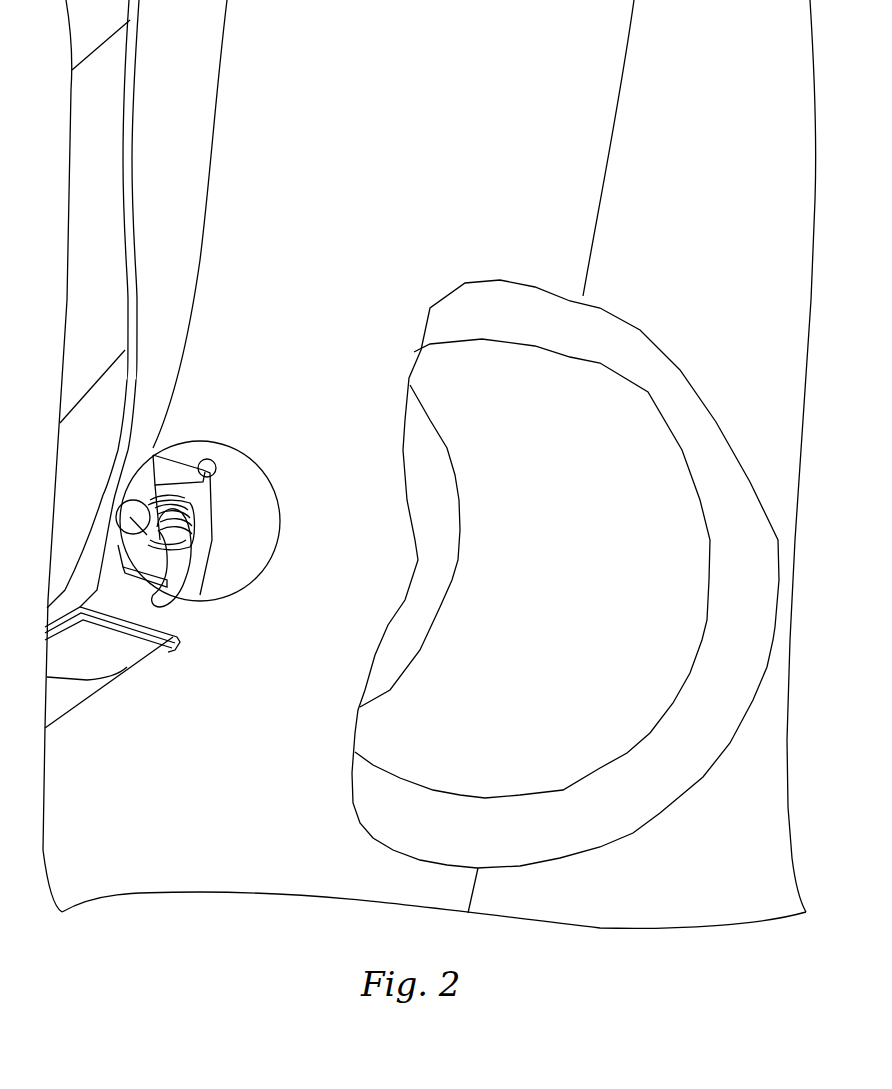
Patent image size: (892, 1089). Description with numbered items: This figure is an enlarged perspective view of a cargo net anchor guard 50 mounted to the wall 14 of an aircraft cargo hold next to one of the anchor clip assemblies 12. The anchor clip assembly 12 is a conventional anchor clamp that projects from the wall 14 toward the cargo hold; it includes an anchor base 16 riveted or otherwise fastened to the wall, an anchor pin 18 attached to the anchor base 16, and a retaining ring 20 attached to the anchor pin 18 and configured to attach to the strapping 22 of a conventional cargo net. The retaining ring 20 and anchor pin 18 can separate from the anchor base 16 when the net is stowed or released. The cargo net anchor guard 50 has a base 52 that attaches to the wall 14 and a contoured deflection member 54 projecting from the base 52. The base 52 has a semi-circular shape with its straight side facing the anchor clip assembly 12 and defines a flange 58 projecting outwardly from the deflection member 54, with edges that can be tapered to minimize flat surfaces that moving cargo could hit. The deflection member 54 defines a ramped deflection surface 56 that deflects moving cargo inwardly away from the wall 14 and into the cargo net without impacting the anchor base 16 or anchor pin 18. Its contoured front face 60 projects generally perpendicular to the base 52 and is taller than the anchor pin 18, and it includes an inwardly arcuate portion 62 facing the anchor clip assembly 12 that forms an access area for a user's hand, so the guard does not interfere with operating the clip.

The anchor clip assembly 12 is at (186, 564).
The wall 14 is at (707, 225).
The anchor base 16 is at (247, 505).
The anchor pin 18 is at (188, 603).
The retaining ring 20 is at (172, 605).
The strapping 22 is at (97, 658).
The cargo net anchor guard 50 is at (574, 596).
The base 52 is at (677, 398).
The deflection member 54 is at (636, 462).
The ramped deflection surface 56 is at (628, 540).
The flange 58 is at (650, 373).
The front face 60 is at (458, 493).
The inwardly arcuate portion 62 is at (455, 547).